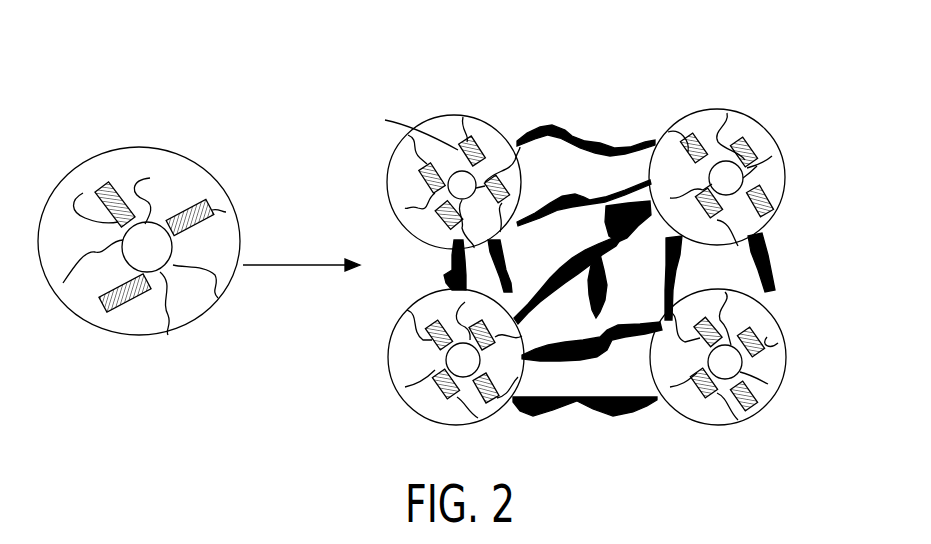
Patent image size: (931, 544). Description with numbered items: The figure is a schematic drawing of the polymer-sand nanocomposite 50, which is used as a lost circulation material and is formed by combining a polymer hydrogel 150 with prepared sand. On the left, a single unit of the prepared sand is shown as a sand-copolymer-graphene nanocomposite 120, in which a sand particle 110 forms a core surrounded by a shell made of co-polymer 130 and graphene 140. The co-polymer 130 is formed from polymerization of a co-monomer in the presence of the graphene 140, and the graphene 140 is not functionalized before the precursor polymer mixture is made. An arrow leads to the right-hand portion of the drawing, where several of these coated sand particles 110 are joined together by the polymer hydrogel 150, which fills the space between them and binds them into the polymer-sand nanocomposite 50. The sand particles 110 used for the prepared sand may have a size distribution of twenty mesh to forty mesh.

The polymer-sand nanocomposite 50 is at (752, 90).
The sand particle 110 is at (147, 253).
The sand-copolymer-graphene nanocomposite 120 is at (115, 110).
The co-polymer 130 is at (150, 178).
The graphene 140 is at (97, 200).
The polymer hydrogel 150 is at (571, 133).